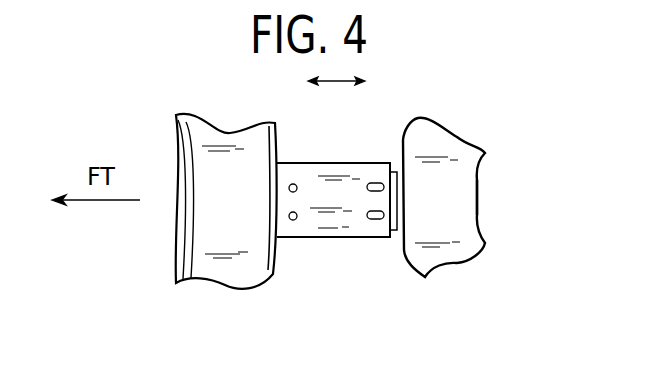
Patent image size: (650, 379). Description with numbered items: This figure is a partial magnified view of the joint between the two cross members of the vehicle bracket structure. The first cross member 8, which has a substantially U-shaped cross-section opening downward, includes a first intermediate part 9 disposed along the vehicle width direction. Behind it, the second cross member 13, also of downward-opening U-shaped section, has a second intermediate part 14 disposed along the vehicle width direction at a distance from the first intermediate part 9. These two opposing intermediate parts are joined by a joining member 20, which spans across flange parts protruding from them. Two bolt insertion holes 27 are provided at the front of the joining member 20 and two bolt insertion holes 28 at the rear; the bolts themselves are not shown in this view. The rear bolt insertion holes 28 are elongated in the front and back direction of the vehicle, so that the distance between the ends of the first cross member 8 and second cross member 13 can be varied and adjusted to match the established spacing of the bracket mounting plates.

The first cross member 8 is at (187, 192).
The first intermediate part 9 is at (187, 233).
The second cross member 13 is at (480, 213).
The second intermediate part 14 is at (481, 177).
The joining member 20 is at (340, 237).
The bolt insertion holes 27 is at (294, 212).
The bolt insertion holes 28 is at (372, 192).